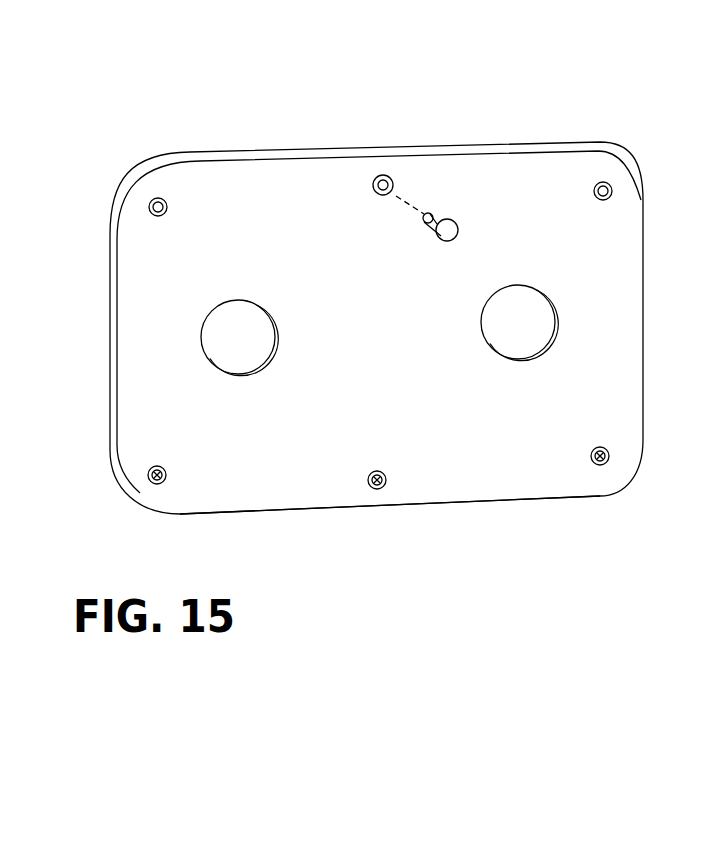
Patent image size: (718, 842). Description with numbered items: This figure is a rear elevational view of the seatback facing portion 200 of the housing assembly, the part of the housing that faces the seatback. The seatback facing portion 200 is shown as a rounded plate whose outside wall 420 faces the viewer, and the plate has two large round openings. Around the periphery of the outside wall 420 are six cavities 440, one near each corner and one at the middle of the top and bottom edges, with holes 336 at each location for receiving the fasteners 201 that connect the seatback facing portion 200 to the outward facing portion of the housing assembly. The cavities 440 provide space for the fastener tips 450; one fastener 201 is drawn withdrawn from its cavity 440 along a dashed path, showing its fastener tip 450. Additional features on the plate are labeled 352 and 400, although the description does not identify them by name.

The seatback facing portion 200 is at (246, 200).
The fasteners 201 is at (432, 214).
The holes 336 is at (166, 199).
The top edge 352 is at (338, 207).
The side wall 400 is at (115, 342).
The outside wall 420 is at (622, 345).
The cavities 440 is at (150, 213).
The fastener tips 450 is at (458, 228).